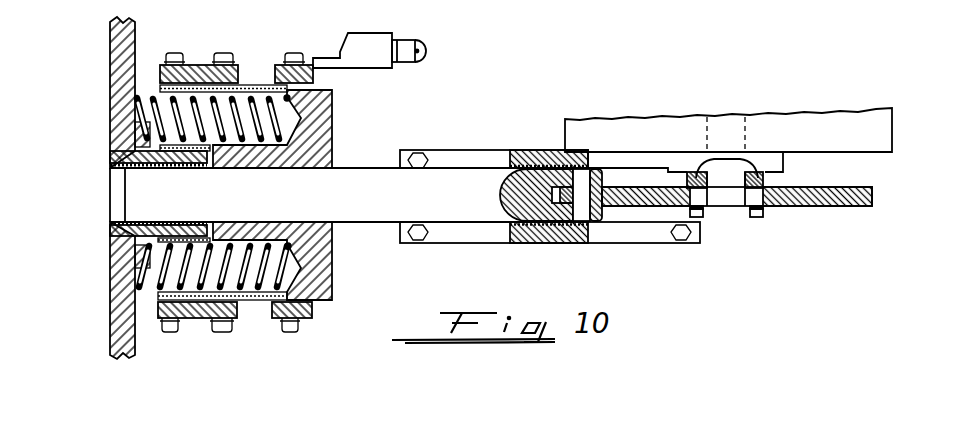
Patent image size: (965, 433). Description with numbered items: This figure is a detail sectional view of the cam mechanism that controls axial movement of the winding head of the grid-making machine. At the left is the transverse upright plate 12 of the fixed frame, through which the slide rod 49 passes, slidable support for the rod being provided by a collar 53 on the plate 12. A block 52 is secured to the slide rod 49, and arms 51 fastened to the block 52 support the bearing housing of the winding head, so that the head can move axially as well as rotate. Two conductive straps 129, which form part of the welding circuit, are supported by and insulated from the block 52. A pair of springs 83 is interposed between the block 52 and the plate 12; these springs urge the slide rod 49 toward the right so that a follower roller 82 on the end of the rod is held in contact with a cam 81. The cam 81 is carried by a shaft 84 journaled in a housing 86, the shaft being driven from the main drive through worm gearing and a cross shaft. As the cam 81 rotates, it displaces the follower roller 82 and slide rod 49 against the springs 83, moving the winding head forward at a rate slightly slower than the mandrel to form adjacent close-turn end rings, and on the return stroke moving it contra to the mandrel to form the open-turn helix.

The transverse upright plate 12 is at (117, 64).
The slide rod 49 is at (372, 222).
The arms 51 is at (196, 65).
The block 52 is at (322, 135).
The collar 53 is at (150, 167).
The cam 81 is at (834, 207).
The follower roller 82 is at (603, 190).
The springs 83 is at (138, 114).
The shaft 84 is at (732, 201).
The housing 86 is at (880, 134).
The conductive straps 129 is at (277, 72).